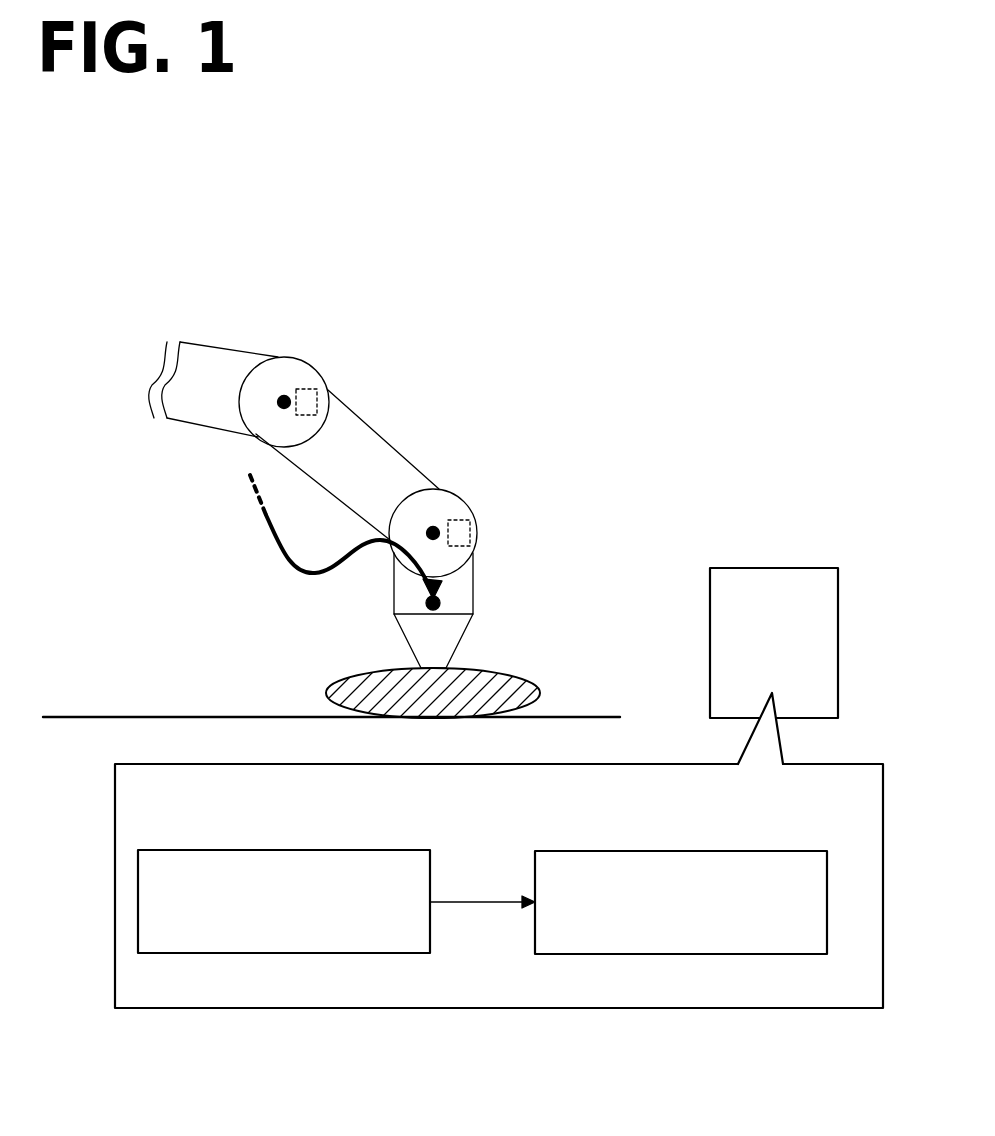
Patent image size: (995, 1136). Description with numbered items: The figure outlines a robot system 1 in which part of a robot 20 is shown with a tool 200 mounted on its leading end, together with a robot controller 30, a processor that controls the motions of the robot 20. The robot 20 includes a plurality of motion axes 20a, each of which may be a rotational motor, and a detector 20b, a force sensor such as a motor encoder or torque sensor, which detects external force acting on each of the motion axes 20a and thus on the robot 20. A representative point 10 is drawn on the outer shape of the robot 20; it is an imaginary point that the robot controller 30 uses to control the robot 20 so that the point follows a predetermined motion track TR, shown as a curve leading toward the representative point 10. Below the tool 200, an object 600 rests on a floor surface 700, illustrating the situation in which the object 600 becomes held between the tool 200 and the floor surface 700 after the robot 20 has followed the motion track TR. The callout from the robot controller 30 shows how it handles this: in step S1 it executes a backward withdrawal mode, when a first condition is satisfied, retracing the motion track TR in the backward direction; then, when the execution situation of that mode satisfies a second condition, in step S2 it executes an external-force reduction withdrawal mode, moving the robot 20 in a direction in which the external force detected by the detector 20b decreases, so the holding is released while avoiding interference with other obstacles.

The robot system 1 is at (463, 304).
The robot 20 is at (399, 409).
The motion axes 20a is at (287, 395).
The detector 20b is at (323, 388).
The representative point 10 is at (445, 600).
The tool 200 is at (450, 647).
The motion track TR is at (278, 548).
The object 600 is at (512, 675).
The floor surface 700 is at (120, 717).
The robot controller 30 is at (778, 568).
The backward withdrawal mode step S1 is at (365, 850).
The external-force reduction withdrawal mode step S2 is at (758, 851).